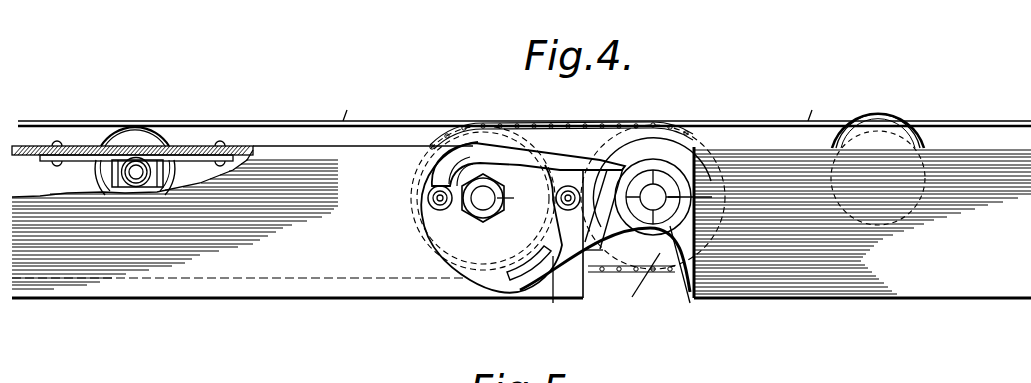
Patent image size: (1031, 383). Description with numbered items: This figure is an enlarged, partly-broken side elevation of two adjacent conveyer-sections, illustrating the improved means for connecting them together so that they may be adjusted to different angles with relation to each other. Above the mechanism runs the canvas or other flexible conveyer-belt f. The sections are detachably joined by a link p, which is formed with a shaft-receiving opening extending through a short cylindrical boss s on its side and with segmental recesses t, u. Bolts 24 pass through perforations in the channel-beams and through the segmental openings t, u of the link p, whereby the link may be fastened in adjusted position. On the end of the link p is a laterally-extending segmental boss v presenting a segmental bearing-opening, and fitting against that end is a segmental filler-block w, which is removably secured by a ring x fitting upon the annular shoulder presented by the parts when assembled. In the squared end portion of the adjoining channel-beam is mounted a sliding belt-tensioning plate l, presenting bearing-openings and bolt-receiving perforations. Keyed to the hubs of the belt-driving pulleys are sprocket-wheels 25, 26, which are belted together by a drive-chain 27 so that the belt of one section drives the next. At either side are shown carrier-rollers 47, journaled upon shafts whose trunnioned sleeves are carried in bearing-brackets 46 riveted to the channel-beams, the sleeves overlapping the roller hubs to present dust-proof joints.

The bolts 24 is at (433, 198).
The sprocket-wheel 25 is at (478, 137).
The sprocket-wheel 26 is at (663, 140).
The drive-chain 27 is at (582, 126).
The bearing-brackets 46 is at (157, 183).
The carrier-rollers 47 is at (143, 140).
The ground a is at (600, 242).
The conveyer-belt f is at (578, 100).
The segmental recess t is at (450, 173).
The cylindrical boss s is at (516, 196).
The link p is at (465, 236).
The segmental recess u is at (555, 299).
The segmental boss v is at (604, 208).
The segmental filler-block w is at (706, 196).
The belt-tensioning plate l is at (605, 285).
The ring x is at (691, 284).